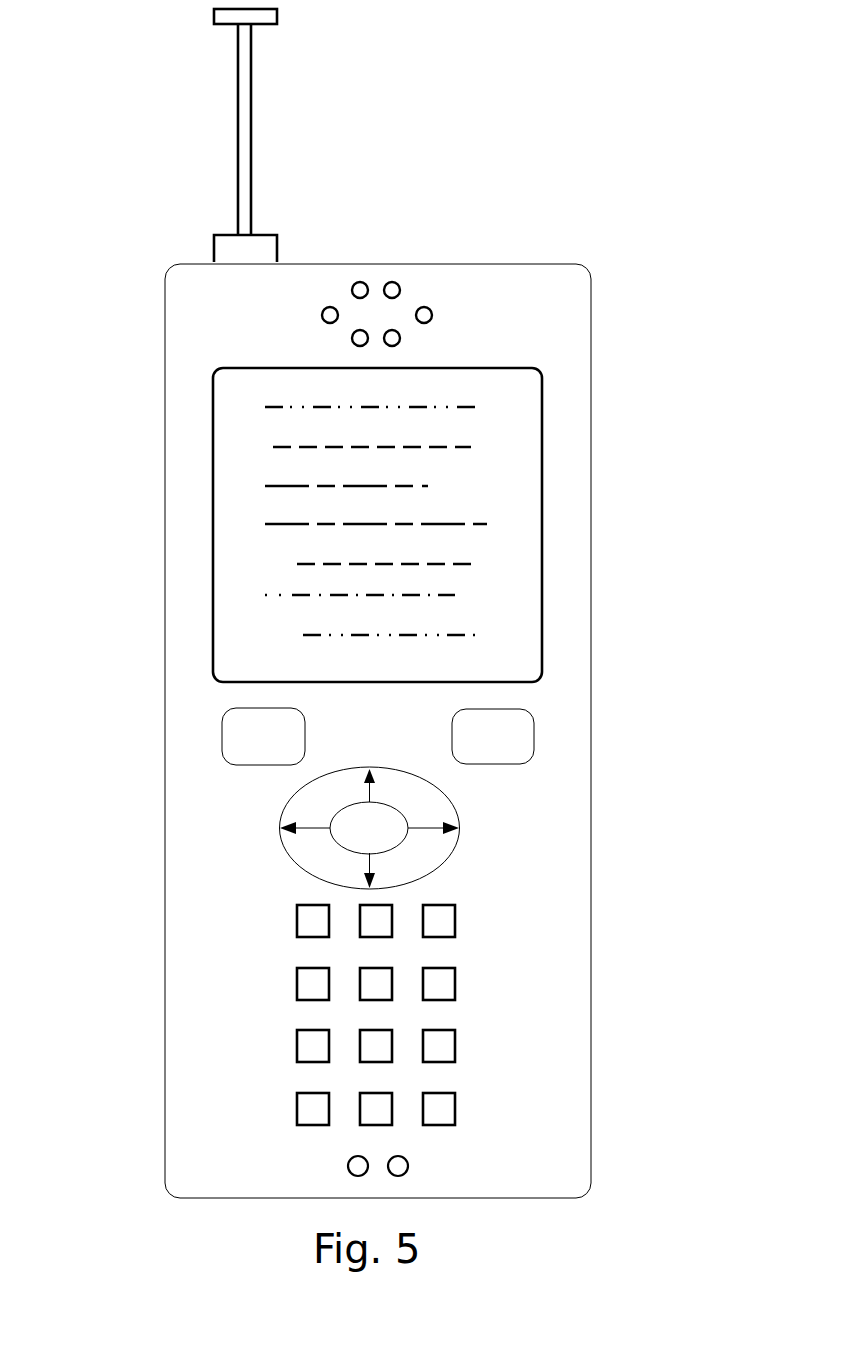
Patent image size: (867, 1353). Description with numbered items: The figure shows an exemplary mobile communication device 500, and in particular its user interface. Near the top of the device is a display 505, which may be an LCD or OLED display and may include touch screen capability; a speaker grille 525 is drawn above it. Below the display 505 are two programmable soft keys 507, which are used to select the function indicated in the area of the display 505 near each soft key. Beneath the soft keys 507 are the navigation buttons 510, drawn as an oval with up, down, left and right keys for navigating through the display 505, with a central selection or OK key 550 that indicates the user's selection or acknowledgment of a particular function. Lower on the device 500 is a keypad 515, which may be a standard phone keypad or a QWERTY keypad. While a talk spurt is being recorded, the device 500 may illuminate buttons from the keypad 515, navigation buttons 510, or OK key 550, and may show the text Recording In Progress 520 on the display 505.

The mobile communication device 500 is at (591, 573).
The display 505 is at (542, 639).
The soft keys 507 is at (235, 712).
The navigation buttons 510 is at (450, 802).
The keypad 515 is at (445, 1001).
The Recording In Progress indication 520 is at (235, 662).
The speaker 525 is at (440, 320).
The OK key 550 is at (330, 811).